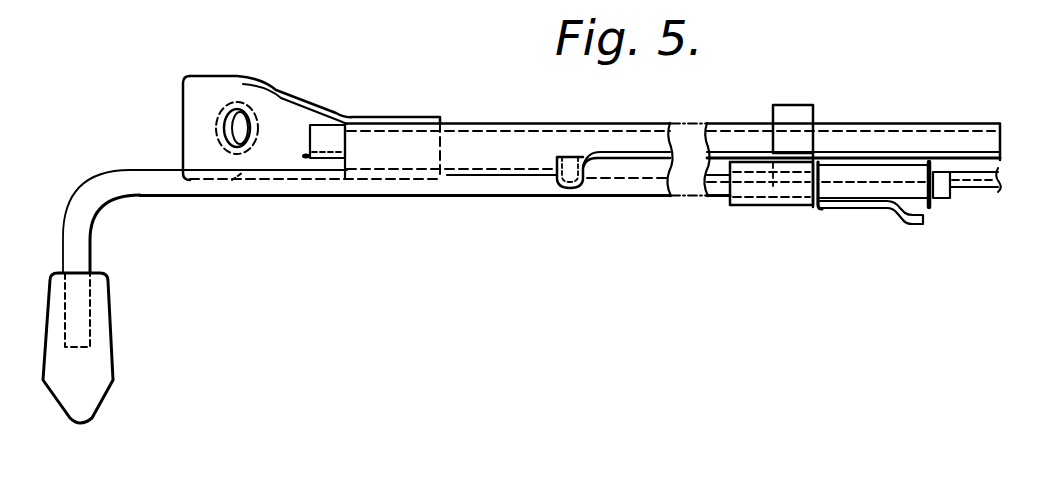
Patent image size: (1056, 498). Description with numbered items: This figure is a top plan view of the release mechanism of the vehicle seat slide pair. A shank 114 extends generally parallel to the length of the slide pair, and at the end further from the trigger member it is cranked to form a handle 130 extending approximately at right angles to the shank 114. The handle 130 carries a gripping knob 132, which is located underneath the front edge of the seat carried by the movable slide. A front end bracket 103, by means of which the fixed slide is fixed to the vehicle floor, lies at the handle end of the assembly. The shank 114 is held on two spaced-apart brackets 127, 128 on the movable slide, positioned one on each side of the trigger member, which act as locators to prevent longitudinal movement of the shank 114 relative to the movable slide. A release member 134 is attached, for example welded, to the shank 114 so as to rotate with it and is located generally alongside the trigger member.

The front end bracket 103 is at (182, 103).
The shank 114 is at (523, 196).
The bracket 127 is at (927, 207).
The bracket 128 is at (814, 209).
The handle 130 is at (80, 247).
The gripping knob 132 is at (88, 368).
The release member 134 is at (750, 204).